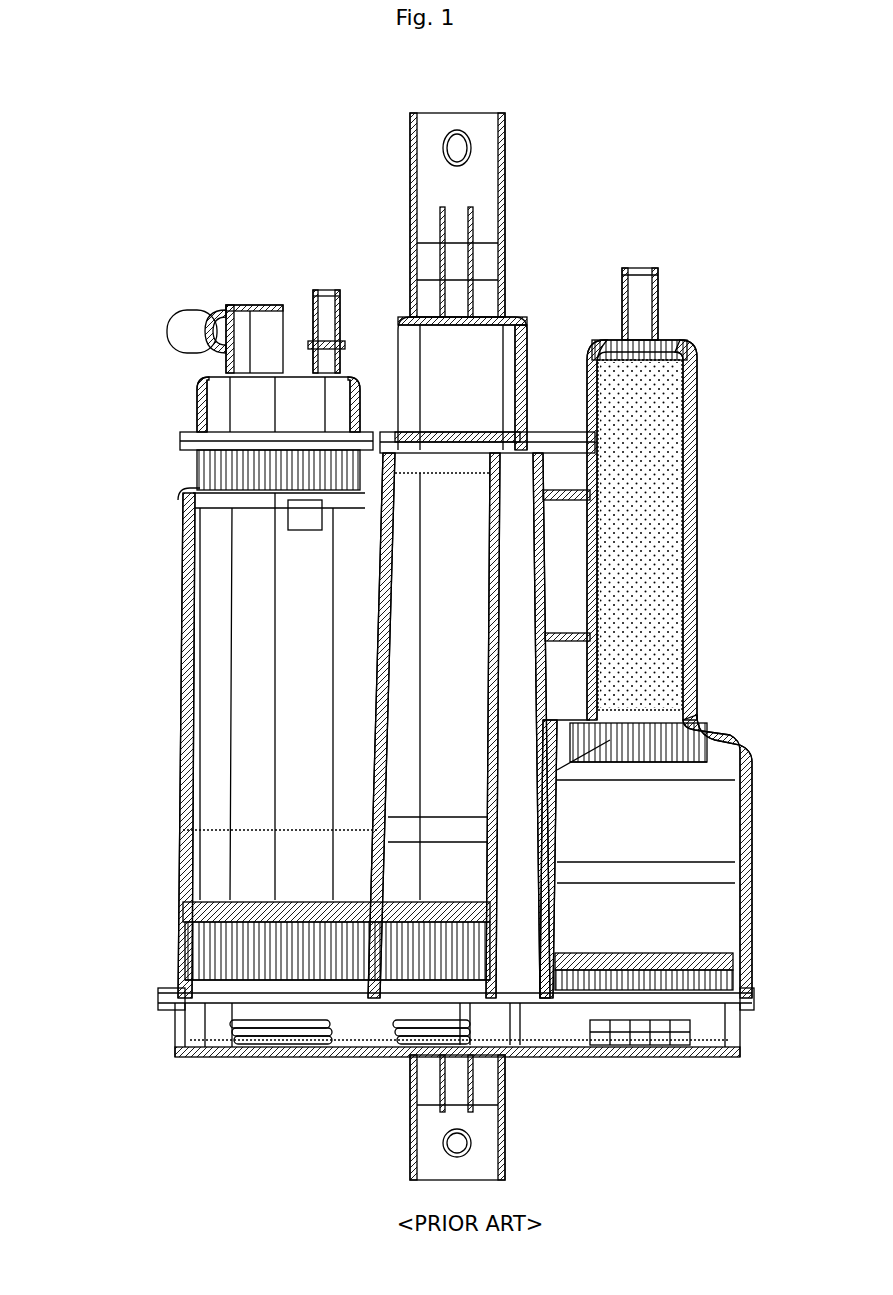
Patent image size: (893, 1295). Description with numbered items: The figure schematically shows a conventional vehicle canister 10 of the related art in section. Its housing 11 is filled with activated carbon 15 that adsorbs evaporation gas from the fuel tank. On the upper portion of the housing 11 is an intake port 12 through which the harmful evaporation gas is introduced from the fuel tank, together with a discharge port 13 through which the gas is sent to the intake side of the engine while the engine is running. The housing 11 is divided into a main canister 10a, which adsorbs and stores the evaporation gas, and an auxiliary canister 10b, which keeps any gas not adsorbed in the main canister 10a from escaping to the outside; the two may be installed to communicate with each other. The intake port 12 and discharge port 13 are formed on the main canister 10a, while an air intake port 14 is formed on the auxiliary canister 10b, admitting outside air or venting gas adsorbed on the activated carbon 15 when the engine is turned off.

The canister 10 is at (178, 97).
The main canister 10a is at (176, 490).
The auxiliary canister 10b is at (690, 340).
The housing 11 is at (180, 558).
The intake port 12 is at (258, 335).
The discharge port 13 is at (327, 315).
The air intake port 14 is at (640, 300).
The activated carbon 15 is at (648, 500).